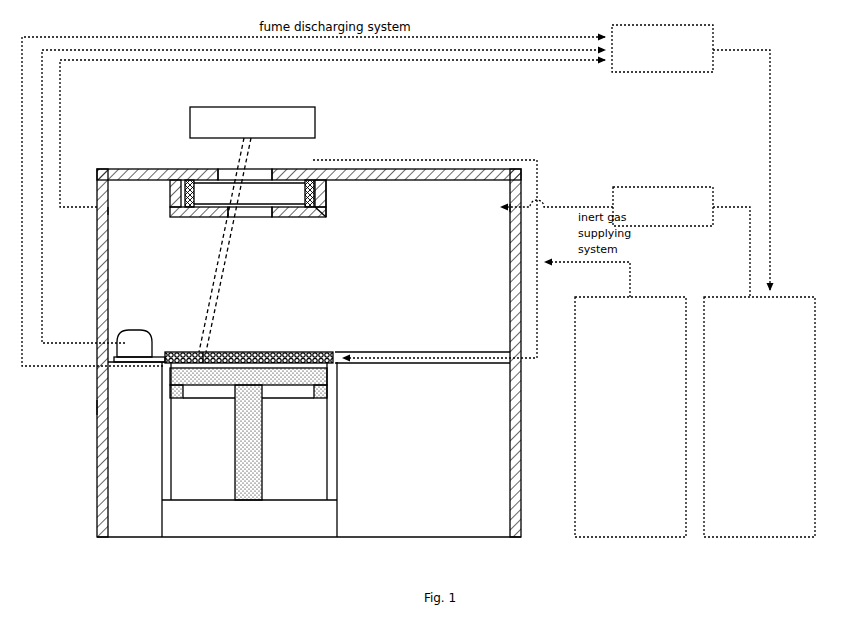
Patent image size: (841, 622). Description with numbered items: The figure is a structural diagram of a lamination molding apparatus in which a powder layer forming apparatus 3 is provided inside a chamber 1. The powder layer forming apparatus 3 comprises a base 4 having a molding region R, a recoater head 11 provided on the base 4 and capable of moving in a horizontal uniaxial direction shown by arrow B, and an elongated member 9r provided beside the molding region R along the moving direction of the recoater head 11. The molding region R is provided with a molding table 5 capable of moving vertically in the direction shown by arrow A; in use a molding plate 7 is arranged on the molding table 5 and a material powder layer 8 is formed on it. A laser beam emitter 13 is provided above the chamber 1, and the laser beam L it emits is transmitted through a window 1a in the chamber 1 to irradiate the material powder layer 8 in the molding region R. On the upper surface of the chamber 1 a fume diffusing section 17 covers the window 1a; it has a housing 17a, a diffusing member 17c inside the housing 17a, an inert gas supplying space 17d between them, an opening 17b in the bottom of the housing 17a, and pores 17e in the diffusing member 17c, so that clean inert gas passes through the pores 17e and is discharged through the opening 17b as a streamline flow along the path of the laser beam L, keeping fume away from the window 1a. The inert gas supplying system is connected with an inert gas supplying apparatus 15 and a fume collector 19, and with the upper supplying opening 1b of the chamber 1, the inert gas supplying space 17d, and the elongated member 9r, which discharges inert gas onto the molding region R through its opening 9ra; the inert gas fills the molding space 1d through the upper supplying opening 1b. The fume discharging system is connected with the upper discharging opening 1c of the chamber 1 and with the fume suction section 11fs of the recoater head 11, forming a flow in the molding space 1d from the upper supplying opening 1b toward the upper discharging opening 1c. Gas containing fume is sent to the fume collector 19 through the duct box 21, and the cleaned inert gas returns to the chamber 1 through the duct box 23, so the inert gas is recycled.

The chamber 1 is at (135, 169).
The window 1a is at (228, 169).
The upper supplying opening 1b is at (503, 207).
The upper discharging opening 1c is at (113, 211).
The molding space 1d is at (345, 291).
The powder layer forming apparatus 3 is at (380, 336).
The base 4 is at (127, 406).
The molding table 5 is at (328, 384).
The molding plate 7 is at (330, 380).
The material powder layer 8 is at (330, 368).
The elongated member 9r is at (283, 350).
The opening 9ra is at (231, 350).
The recoater head 11 is at (137, 330).
The fume suction section 11fs is at (158, 345).
The laser beam emitter 13 is at (296, 107).
The inert gas supplying apparatus 15 is at (640, 297).
The fume diffusing section 17 is at (279, 208).
The housing 17a is at (328, 193).
The opening 17b is at (262, 218).
The diffusing member 17c is at (300, 196).
The inert gas supplying space 17d is at (321, 218).
The pores 17e is at (302, 186).
The fume collector 19 is at (796, 297).
The duct box 21 is at (678, 25).
The duct box 23 is at (678, 187).
The arrow A is at (273, 422).
The arrow B is at (163, 287).
The laser beam L is at (226, 262).
The molding region R is at (334, 320).